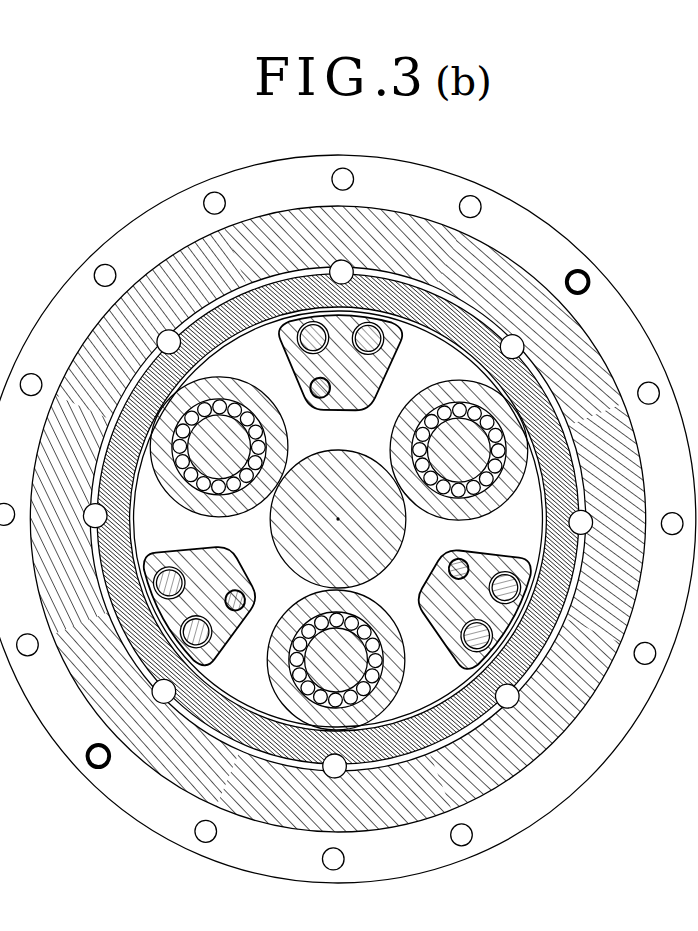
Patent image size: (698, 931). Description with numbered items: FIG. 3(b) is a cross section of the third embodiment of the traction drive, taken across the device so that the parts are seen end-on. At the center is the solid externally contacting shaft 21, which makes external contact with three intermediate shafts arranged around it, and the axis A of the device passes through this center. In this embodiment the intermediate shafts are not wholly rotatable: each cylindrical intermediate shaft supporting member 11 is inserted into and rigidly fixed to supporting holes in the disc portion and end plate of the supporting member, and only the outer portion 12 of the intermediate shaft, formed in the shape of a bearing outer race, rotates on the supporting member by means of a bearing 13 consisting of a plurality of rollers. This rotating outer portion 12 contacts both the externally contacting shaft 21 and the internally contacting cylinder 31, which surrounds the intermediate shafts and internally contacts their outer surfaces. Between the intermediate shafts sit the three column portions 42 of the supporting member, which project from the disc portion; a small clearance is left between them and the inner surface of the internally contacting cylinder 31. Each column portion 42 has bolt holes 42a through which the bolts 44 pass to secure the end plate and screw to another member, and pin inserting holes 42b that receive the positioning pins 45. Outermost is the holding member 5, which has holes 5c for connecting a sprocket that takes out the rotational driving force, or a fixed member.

The holding member 5 is at (249, 161).
The holes 5c is at (376, 487).
The internally contacting cylinder 31 is at (338, 519).
The bearing 13 is at (218, 458).
The intermediate shaft supporting member 11 is at (218, 474).
The outer portion of the intermediate shaft 12 is at (355, 660).
The externally contacting shaft 21 is at (328, 519).
The central axis A is at (380, 543).
The column portions 42 is at (339, 380).
The bolt holes 42a is at (277, 345).
The pin inserting holes 42b is at (203, 607).
The bolts 44 is at (403, 346).
The positioning pins 45 is at (314, 411).